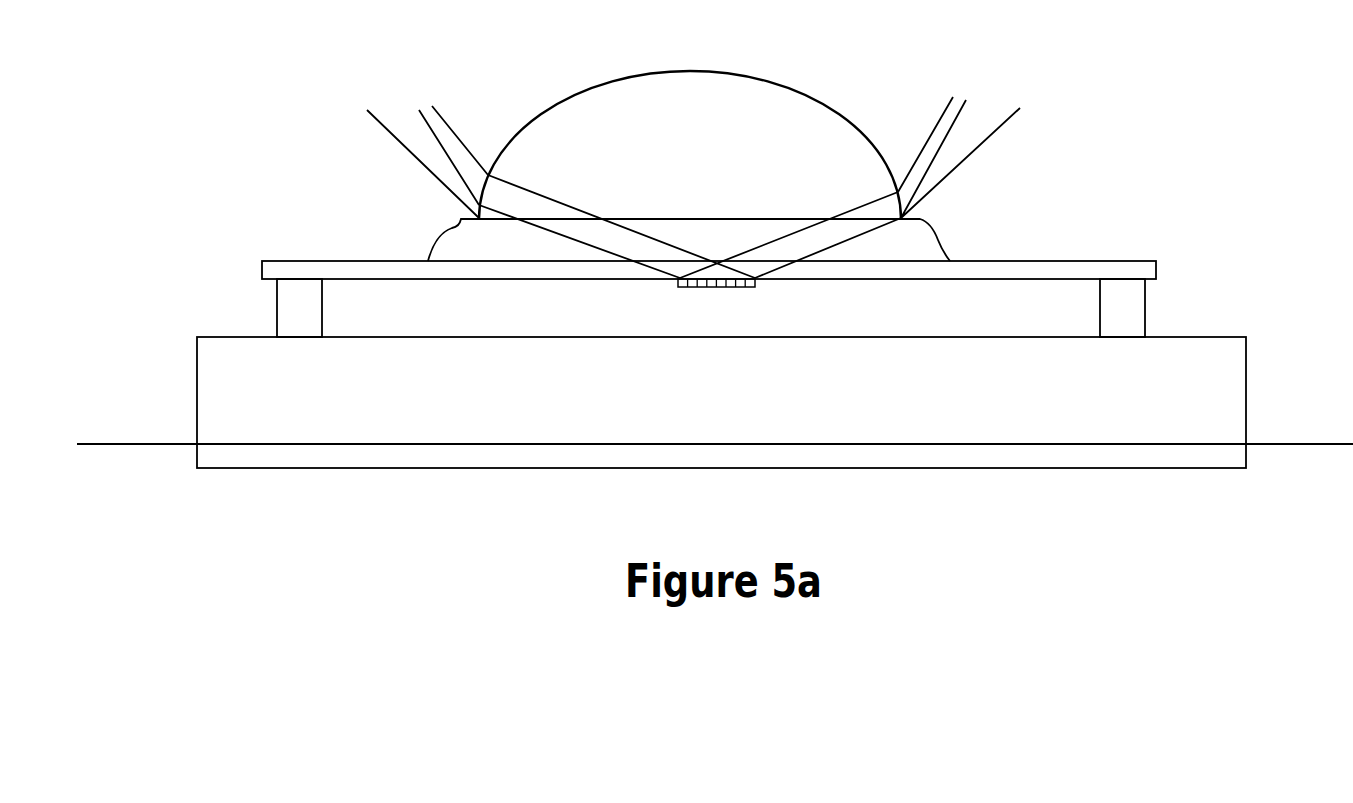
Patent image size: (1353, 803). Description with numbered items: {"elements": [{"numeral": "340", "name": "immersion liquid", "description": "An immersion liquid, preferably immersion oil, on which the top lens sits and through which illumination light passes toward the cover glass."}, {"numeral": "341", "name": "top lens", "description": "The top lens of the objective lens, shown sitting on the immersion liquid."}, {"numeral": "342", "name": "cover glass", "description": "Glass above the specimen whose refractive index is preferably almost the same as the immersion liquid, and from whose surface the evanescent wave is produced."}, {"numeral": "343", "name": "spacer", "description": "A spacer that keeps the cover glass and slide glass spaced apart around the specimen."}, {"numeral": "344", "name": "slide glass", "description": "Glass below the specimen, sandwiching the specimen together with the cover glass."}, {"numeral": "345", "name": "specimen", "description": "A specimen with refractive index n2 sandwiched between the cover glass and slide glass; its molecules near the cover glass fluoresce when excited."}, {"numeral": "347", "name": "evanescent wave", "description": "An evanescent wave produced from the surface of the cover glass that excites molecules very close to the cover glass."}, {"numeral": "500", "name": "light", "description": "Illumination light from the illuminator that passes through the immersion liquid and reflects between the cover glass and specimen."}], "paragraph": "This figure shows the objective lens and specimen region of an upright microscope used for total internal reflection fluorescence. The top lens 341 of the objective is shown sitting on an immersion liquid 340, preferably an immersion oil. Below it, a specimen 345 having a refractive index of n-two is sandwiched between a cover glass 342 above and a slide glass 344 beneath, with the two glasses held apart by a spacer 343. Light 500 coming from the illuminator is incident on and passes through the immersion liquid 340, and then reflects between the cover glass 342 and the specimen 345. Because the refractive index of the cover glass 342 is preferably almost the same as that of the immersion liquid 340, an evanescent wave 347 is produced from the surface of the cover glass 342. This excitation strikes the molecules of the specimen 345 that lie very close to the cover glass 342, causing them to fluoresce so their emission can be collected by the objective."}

The lens base / adhesive mount 340 is at (432, 258).
The dome lens 341 is at (760, 79).
The substrate plate 342 is at (1095, 268).
The right support spacer 343 is at (1133, 310).
The base / housing 344 is at (210, 380).
The left support spacer 345 is at (391, 318).
The photodetector array 347 is at (753, 288).
The light rays 500 is at (459, 148).